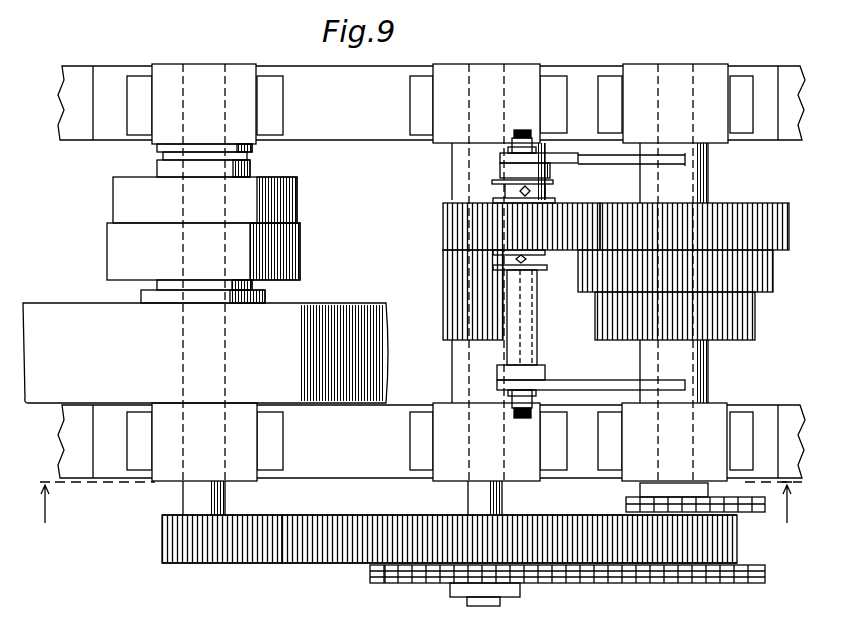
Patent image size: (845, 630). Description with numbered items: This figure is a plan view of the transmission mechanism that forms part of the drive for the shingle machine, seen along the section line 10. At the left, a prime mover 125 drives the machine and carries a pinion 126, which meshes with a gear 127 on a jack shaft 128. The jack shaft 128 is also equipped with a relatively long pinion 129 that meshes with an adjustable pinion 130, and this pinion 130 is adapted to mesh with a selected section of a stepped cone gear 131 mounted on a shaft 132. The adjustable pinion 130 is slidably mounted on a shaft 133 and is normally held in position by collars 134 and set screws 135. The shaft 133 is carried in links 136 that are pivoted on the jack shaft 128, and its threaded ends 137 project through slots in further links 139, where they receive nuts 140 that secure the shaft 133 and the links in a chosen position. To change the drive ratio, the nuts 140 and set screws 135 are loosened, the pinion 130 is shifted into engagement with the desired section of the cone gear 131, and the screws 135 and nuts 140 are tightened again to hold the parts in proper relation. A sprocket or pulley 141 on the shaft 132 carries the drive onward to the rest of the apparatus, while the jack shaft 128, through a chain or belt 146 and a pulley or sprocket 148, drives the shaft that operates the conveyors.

The section line 10- 10 is at (416, 515).
The prime mover 125 is at (63, 320).
The pinion 126 is at (175, 535).
The gear 127 is at (332, 532).
The jack shaft 128 is at (480, 500).
The relatively long pinion 129 is at (462, 268).
The adjustable pinion 130 is at (487, 220).
The cone gear 131 is at (757, 217).
The shaft 132 is at (693, 362).
The shaft 133 is at (538, 345).
The collars 134 is at (547, 186).
The set screws 135 is at (560, 192).
The links 136 is at (500, 166).
The threaded ends 137 is at (524, 135).
The links 139 is at (593, 158).
The nuts 140 is at (528, 133).
The sprocket or pulley 141 is at (628, 503).
The chain or belt 146 is at (722, 584).
The pulley or sprocket 148 is at (408, 576).